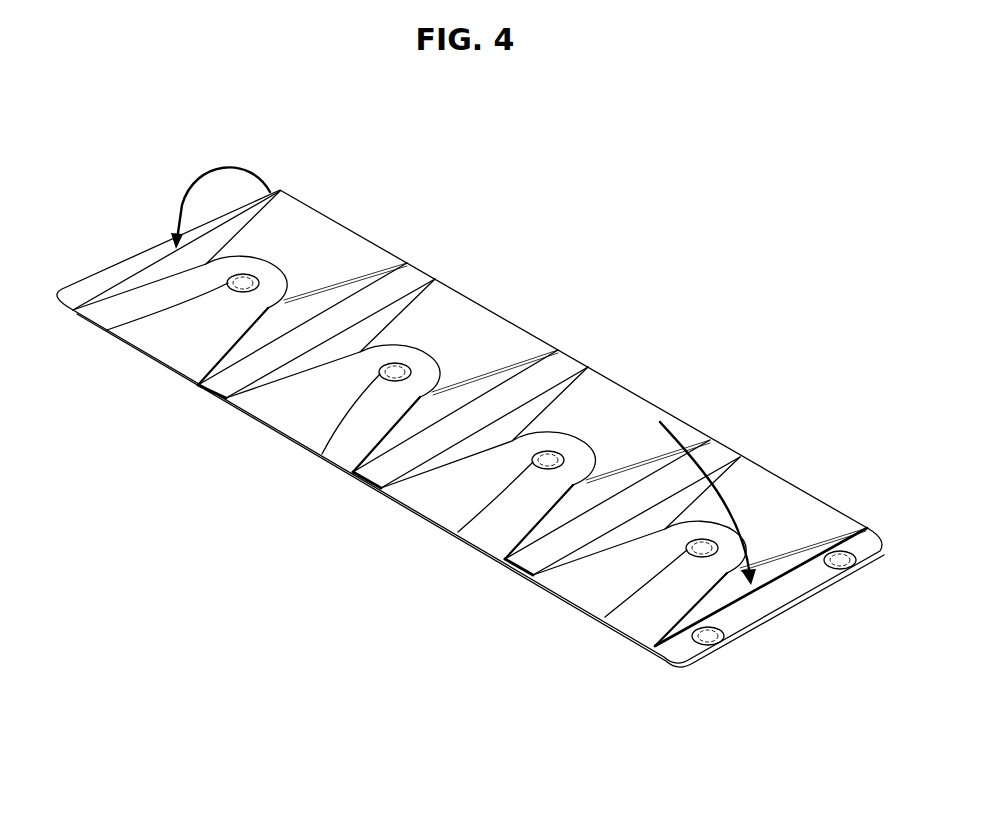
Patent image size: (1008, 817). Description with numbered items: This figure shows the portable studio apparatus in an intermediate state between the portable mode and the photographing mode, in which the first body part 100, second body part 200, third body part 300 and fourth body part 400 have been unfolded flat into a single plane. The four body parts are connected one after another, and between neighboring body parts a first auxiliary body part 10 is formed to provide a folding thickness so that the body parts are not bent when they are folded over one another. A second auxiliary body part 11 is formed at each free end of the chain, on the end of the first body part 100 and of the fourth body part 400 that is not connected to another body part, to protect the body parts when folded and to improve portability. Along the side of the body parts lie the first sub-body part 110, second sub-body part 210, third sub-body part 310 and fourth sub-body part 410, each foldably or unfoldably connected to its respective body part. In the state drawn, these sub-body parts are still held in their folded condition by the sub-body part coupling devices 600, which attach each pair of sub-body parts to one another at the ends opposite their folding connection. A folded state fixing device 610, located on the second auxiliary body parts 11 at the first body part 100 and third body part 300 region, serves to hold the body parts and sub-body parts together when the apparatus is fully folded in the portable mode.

The first auxiliary body part 10 is at (208, 393).
The second auxiliary body part 11 is at (138, 255).
The first body part 100 is at (777, 568).
The first sub-body part 110 is at (747, 482).
The second body part 200 is at (612, 485).
The second sub-body part 210 is at (593, 392).
The third body part 300 is at (467, 390).
The third sub-body part 310 is at (453, 303).
The fourth body part 400 is at (322, 303).
The fourth sub-body part 410 is at (305, 228).
The sub-body part coupling device 600 is at (247, 275).
The folded state fixing device 610 is at (838, 570).